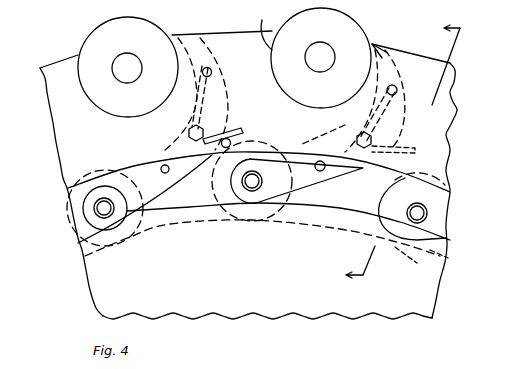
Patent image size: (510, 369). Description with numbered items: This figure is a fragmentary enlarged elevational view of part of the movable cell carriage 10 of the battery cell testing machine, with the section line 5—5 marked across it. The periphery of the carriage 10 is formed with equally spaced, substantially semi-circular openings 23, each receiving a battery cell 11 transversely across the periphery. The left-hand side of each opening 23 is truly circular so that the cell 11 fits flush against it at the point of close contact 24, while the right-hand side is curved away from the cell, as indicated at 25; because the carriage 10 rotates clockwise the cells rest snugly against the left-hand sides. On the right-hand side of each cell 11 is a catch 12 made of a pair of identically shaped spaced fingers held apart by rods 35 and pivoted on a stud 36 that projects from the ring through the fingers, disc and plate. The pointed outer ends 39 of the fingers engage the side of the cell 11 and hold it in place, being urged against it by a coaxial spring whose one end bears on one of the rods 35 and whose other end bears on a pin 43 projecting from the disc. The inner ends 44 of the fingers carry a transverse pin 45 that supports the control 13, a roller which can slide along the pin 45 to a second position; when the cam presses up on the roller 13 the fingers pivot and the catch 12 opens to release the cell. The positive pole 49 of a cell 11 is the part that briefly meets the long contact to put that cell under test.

The section line 5- 5 is at (409, 159).
The movable cell carriage 10 is at (445, 101).
The battery cell 11 is at (147, 33).
The catch 12 is at (206, 40).
The movable control 13 is at (229, 186).
The peripheral semi-circular opening 23 is at (105, 113).
The point of close contact 24 is at (257, 29).
The curved-away side of opening 25 is at (415, 32).
The rod 35 is at (397, 91).
The stud 36 is at (372, 139).
The pointed outer end of finger 39 is at (375, 45).
The pin 43 is at (404, 157).
The inner end of finger 44 is at (262, 200).
The transverse pin 45 is at (249, 186).
The positive pole 49 is at (320, 57).